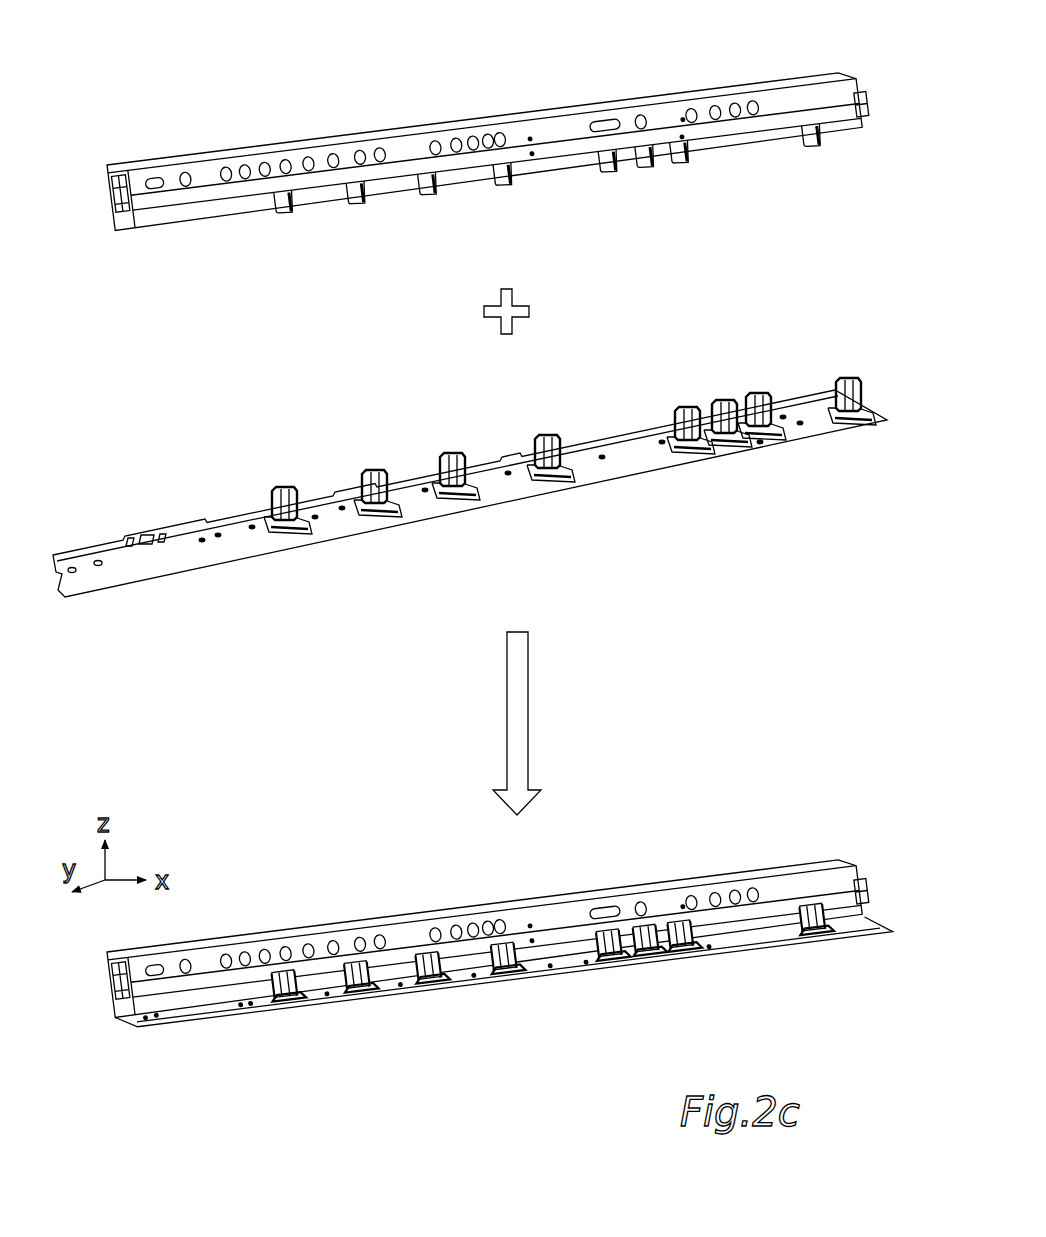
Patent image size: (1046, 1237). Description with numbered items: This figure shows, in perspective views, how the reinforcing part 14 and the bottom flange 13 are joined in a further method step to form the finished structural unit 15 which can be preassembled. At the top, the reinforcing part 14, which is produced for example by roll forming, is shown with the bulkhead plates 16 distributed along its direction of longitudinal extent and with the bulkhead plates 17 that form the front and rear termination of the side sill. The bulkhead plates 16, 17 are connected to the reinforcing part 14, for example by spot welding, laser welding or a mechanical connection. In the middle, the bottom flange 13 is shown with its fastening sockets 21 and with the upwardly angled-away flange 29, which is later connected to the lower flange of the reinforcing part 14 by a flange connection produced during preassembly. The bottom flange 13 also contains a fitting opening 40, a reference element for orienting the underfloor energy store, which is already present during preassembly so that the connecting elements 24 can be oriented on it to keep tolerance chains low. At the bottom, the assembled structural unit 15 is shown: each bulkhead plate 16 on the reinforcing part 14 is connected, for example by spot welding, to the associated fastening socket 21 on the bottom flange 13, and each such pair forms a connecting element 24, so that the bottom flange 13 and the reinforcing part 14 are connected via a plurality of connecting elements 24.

The bottom flange 13 is at (625, 470).
The reinforcing part 14 is at (610, 70).
The structural unit 15 is at (610, 854).
The bulkhead plate 16 is at (282, 211).
The bulkhead plate 17 is at (112, 207).
The fastening socket 21 is at (295, 476).
The connecting element 24 is at (421, 998).
The flange 29 is at (634, 432).
The fitting opening 40 is at (762, 446).